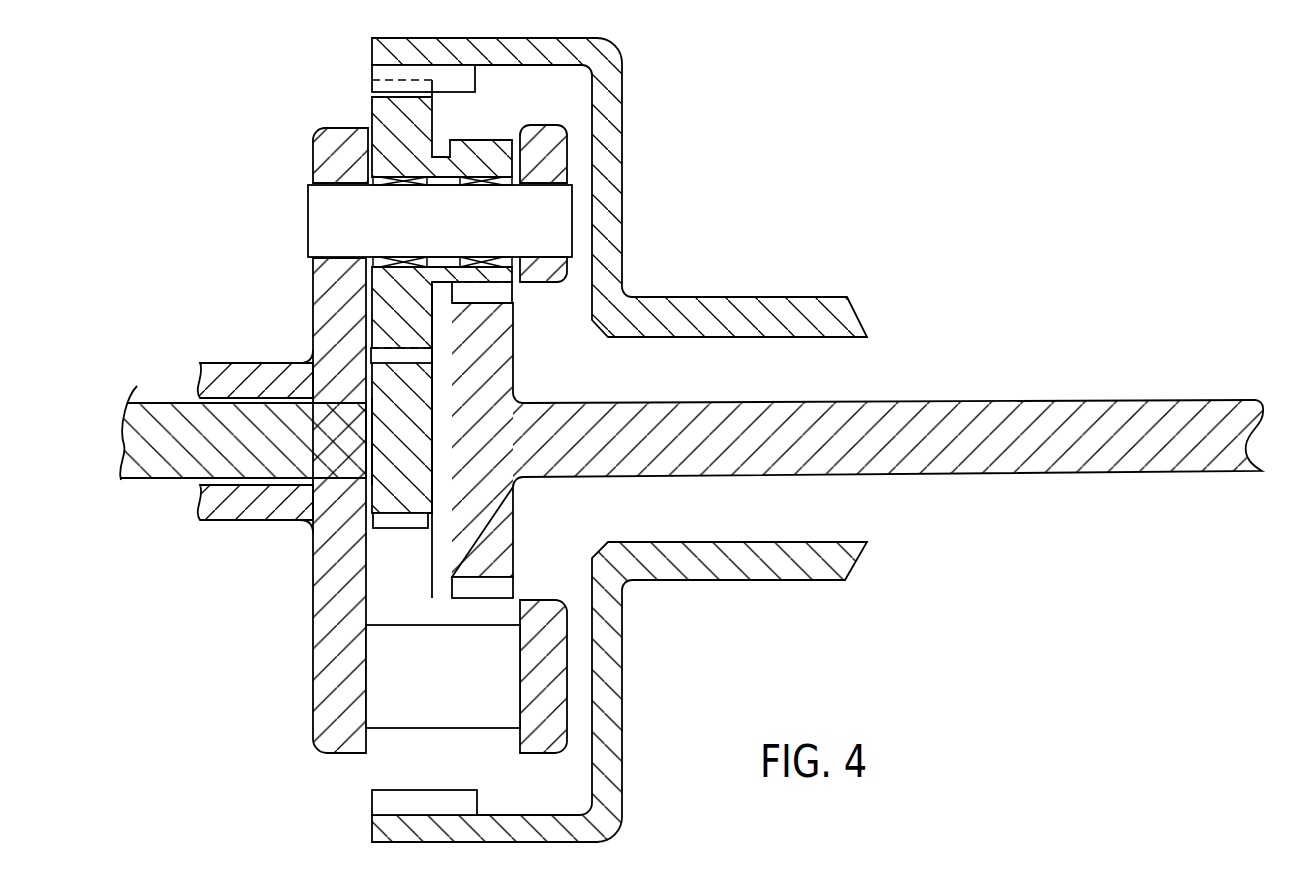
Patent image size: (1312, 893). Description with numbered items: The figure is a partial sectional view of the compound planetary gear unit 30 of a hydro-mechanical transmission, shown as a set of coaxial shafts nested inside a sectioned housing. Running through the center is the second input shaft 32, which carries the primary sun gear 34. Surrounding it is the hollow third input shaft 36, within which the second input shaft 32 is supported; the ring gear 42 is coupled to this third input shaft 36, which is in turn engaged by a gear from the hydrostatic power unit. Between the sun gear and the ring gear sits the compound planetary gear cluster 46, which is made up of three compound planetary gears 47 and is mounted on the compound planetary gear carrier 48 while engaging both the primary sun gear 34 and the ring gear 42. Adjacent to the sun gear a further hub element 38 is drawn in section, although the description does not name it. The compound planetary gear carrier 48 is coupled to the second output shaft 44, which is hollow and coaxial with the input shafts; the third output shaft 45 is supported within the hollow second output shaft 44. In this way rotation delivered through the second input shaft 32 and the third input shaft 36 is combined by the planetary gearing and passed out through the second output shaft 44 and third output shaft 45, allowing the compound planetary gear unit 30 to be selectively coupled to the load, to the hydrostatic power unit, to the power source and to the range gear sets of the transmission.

The compound planetary gear unit 30 is at (892, 608).
The second input shaft 32 is at (982, 400).
The primary sun gear 34 is at (517, 558).
The third input shaft 36 is at (738, 297).
The hub 38 is at (402, 533).
The ring gear 42 is at (622, 108).
The second output shaft 44 is at (250, 363).
The third output shaft 45 is at (158, 480).
The compound planetary gear cluster 46 is at (303, 125).
The compound planetary gear 47 is at (372, 110).
The compound planetary gear carrier 48 is at (312, 162).